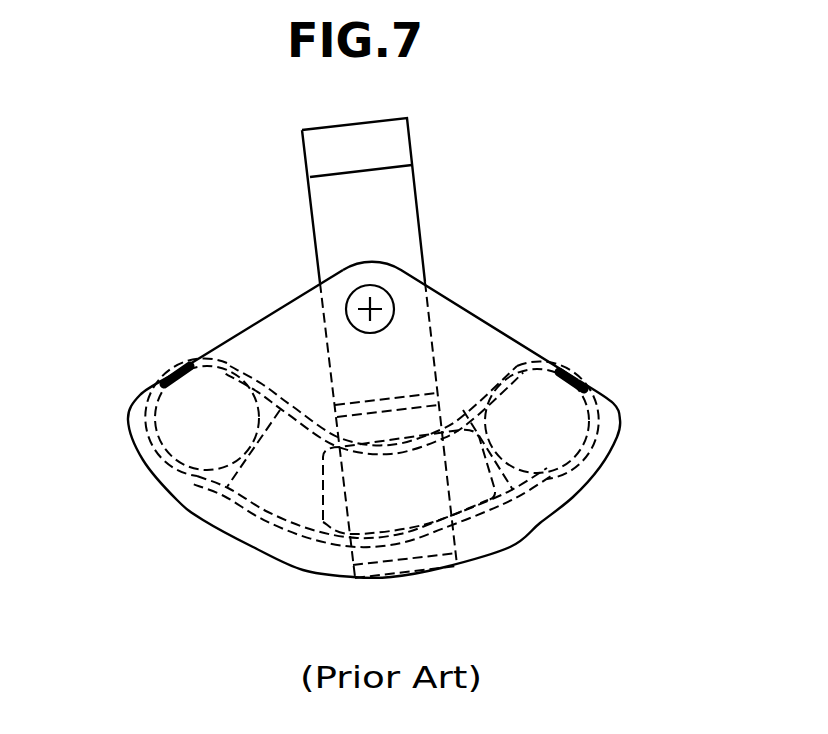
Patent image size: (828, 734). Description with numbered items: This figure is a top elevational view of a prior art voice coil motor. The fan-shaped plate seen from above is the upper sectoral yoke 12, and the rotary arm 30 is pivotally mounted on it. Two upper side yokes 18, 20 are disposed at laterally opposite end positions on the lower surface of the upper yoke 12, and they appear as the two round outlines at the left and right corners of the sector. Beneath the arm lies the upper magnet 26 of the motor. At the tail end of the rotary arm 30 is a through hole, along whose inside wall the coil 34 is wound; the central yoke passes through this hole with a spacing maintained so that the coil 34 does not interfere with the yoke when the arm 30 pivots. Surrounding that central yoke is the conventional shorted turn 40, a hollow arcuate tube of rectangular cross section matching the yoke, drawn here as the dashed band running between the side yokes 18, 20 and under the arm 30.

The upper sectoral yoke 12 is at (495, 333).
The upper side yoke 18 is at (552, 422).
The upper side yoke 20 is at (180, 397).
The upper magnet 26 is at (330, 527).
The rotary arm 30 is at (413, 171).
The coil 34 is at (410, 582).
The shorted turn 40 is at (257, 530).